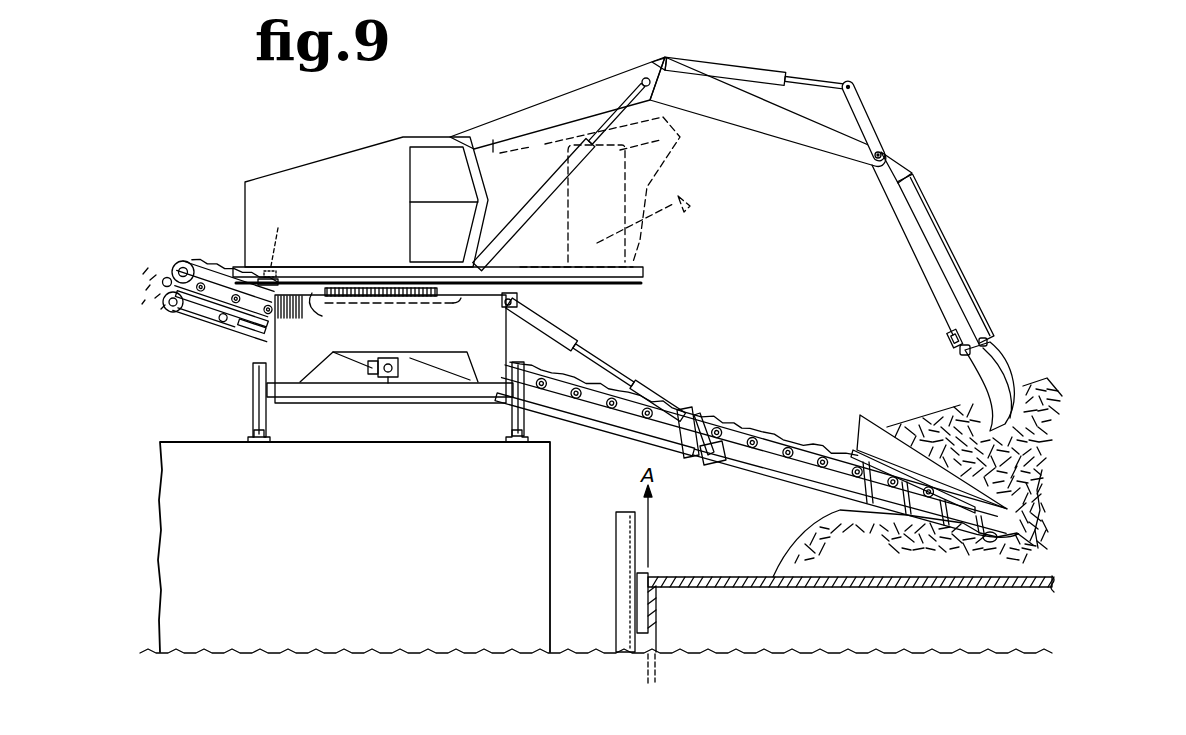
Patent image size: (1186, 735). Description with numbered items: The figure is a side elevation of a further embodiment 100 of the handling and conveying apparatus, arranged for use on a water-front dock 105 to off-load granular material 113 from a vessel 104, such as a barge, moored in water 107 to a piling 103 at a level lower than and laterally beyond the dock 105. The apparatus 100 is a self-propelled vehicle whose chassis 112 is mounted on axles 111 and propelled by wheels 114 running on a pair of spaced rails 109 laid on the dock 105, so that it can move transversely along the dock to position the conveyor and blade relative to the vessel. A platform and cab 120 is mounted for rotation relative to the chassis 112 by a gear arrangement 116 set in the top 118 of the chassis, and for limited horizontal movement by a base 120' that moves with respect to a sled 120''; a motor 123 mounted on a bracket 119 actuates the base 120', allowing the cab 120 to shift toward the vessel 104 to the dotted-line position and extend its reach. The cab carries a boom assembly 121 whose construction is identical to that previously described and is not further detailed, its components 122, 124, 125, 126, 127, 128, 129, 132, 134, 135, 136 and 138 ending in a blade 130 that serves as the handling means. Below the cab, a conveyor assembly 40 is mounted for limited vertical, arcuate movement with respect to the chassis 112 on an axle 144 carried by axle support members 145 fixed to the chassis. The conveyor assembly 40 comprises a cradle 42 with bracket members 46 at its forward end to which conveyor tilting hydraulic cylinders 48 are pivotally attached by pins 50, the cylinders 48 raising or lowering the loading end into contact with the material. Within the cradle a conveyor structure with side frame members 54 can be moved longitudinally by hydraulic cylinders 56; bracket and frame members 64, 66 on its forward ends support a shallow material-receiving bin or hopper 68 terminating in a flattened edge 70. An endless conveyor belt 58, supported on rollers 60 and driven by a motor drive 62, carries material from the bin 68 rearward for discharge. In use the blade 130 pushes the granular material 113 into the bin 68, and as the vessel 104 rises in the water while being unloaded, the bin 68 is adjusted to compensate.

The handling and conveying apparatus 100 is at (270, 161).
The platform and cab 120 is at (486, 192).
The base 120' is at (381, 259).
The sled 120'' is at (454, 291).
The boom assembly 121 is at (547, 100).
The boom section 122 is at (590, 97).
The motor 123 is at (295, 238).
The boom cylinder 124 is at (517, 228).
The boom pivot pin 125 is at (644, 56).
The arm 126 is at (917, 260).
The arm pivot pin 127 is at (885, 150).
The arm cylinder 128 is at (743, 65).
The link 129 is at (864, 110).
The blade 130 is at (1007, 372).
The dipper stick 132 is at (942, 250).
The bucket cylinder 134 is at (953, 338).
The bucket pivot pin 135 is at (987, 340).
The bucket link pin 136 is at (958, 352).
The bucket link 138 is at (986, 337).
The conveyor assembly 40 is at (762, 400).
The conveyor cradle 42 is at (613, 430).
The bracket members 46 is at (713, 413).
The conveyor tilting hydraulic cylinders 48 is at (568, 328).
The pins 50 is at (683, 410).
The side frame members 54 is at (757, 469).
The hydraulic cylinders 56 is at (263, 330).
The conveyor belt 58 is at (783, 447).
The rollers 60 is at (773, 440).
The motor drive 62 is at (167, 306).
The bracket and frame members 64 is at (870, 500).
The bracket and frame members 66 is at (900, 452).
The material-receiving bin 68 is at (870, 416).
The flattened edge 70 is at (992, 540).
The piling 103 is at (616, 535).
The vessel 104 is at (636, 612).
The dock 105 is at (358, 517).
The water 107 is at (858, 676).
The rails 109 is at (268, 435).
The axles 111 is at (290, 385).
The chassis 112 is at (398, 332).
The granular material 113 is at (162, 250).
The wheels 114 is at (252, 405).
The gear arrangement 116 is at (502, 300).
The top of chassis 118 is at (336, 314).
The bracket 119 is at (288, 274).
The axle 144 is at (388, 378).
The axle support members 145 is at (398, 355).